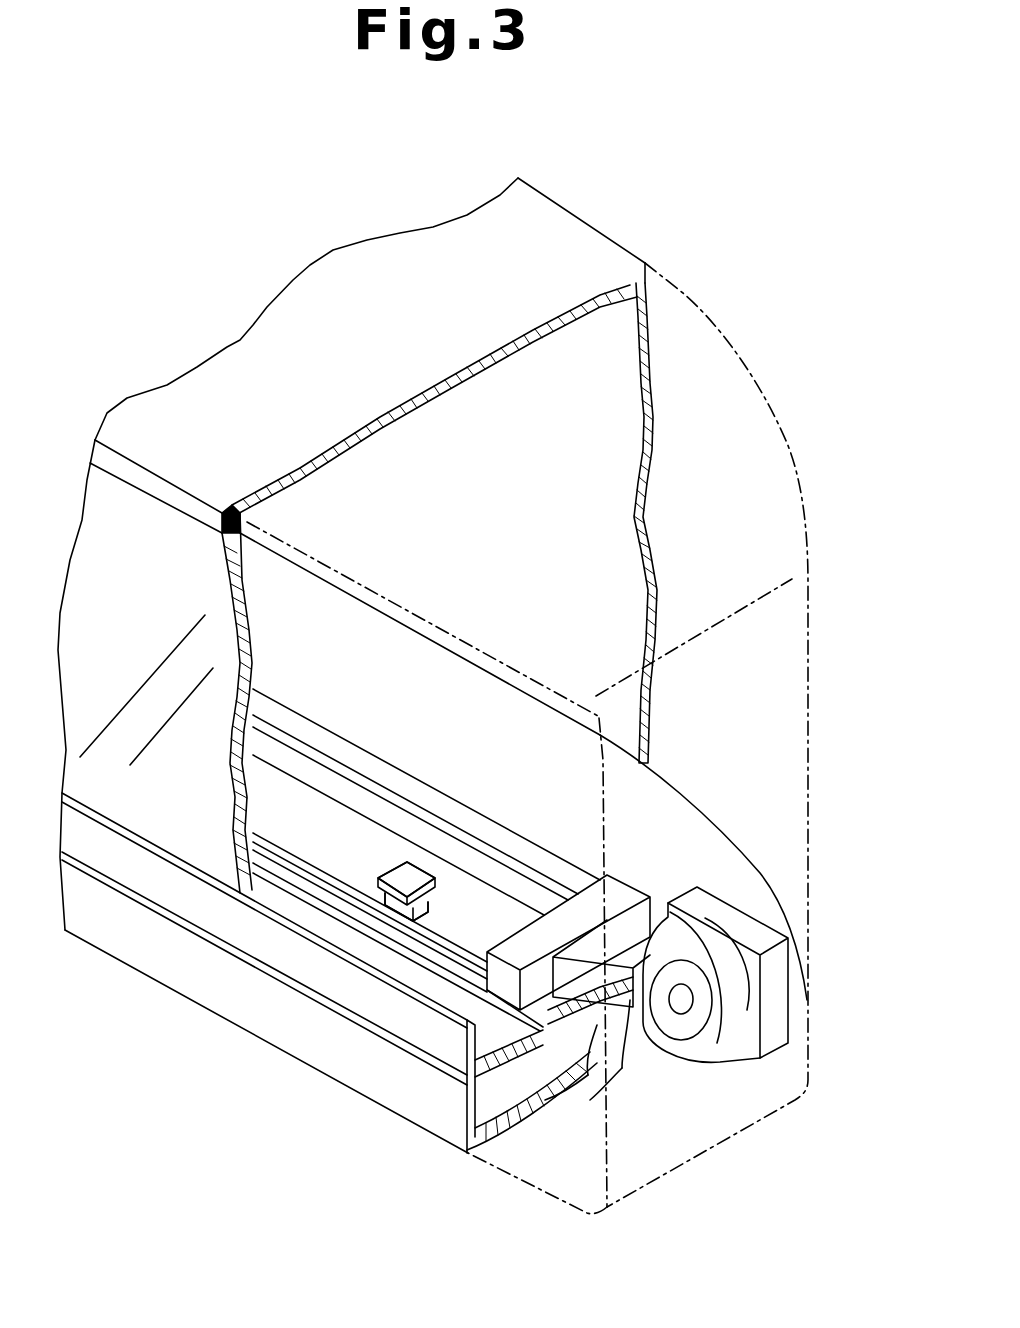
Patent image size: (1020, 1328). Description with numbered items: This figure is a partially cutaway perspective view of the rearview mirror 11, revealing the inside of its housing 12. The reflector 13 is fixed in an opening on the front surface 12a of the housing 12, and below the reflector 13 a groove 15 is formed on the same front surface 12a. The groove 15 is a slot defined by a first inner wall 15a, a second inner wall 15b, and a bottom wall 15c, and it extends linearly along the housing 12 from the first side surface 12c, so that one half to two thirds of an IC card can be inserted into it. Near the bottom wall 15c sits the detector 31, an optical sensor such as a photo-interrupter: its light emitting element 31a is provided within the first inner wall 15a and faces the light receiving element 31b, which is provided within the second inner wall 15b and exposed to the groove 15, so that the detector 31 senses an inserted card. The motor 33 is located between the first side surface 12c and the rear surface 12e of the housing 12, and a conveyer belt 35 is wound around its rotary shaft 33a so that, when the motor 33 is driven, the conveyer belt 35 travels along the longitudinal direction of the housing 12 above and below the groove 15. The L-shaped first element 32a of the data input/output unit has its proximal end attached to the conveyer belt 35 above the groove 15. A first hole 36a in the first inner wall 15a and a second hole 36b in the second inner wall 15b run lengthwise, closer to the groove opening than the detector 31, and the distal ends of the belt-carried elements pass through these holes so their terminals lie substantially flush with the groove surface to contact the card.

The rearview mirror 11 is at (625, 203).
The housing 12 is at (417, 257).
The front surface 12a is at (327, 1057).
The first side surface 12c is at (817, 707).
The rear surface 12e is at (652, 414).
The reflector 13 is at (248, 605).
The groove 15 is at (247, 958).
The first inner wall 15a is at (350, 830).
The second inner wall 15b is at (587, 1027).
The bottom wall 15c is at (613, 1000).
The detector 31 is at (540, 773).
The light emitting element 31a is at (398, 868).
The light receiving element 31b is at (437, 880).
The first element 32a is at (630, 897).
The motor 33 is at (722, 912).
The rotary shaft 33a is at (688, 1027).
The conveyer belt 35 is at (553, 862).
The first hole 36a is at (297, 862).
The second hole 36b is at (550, 1055).